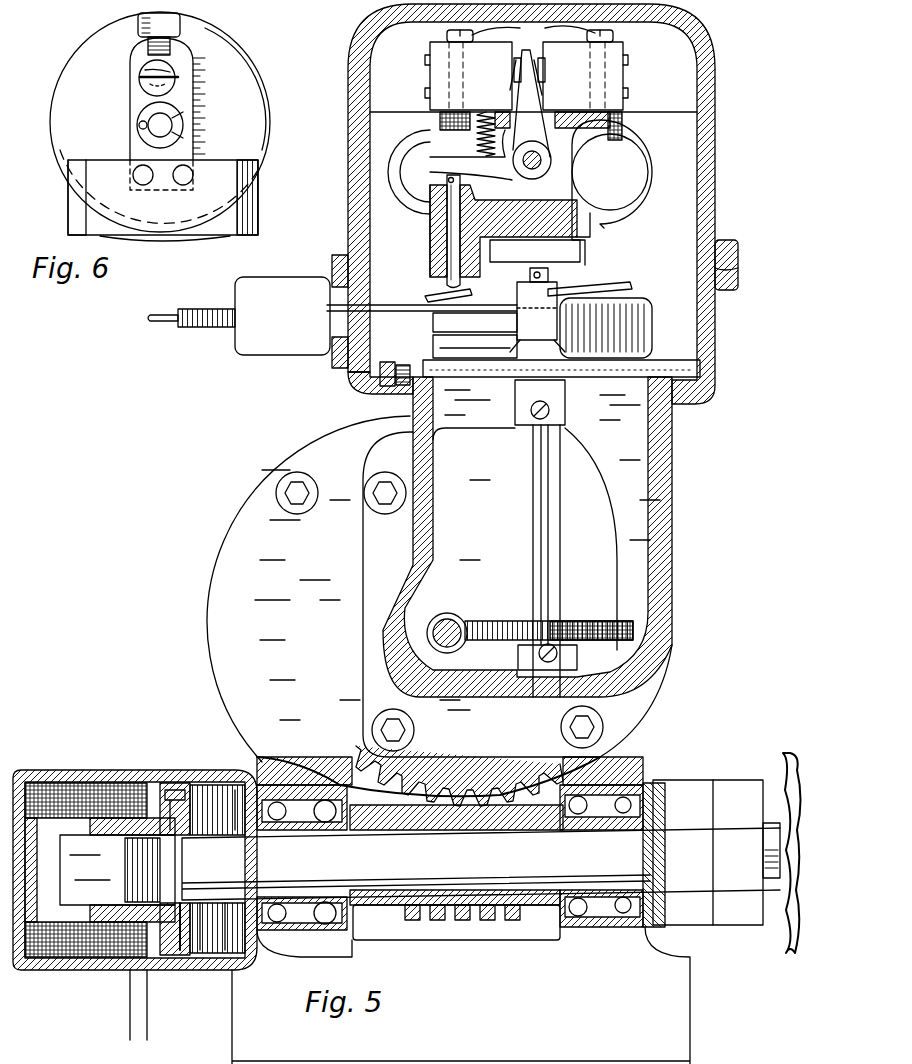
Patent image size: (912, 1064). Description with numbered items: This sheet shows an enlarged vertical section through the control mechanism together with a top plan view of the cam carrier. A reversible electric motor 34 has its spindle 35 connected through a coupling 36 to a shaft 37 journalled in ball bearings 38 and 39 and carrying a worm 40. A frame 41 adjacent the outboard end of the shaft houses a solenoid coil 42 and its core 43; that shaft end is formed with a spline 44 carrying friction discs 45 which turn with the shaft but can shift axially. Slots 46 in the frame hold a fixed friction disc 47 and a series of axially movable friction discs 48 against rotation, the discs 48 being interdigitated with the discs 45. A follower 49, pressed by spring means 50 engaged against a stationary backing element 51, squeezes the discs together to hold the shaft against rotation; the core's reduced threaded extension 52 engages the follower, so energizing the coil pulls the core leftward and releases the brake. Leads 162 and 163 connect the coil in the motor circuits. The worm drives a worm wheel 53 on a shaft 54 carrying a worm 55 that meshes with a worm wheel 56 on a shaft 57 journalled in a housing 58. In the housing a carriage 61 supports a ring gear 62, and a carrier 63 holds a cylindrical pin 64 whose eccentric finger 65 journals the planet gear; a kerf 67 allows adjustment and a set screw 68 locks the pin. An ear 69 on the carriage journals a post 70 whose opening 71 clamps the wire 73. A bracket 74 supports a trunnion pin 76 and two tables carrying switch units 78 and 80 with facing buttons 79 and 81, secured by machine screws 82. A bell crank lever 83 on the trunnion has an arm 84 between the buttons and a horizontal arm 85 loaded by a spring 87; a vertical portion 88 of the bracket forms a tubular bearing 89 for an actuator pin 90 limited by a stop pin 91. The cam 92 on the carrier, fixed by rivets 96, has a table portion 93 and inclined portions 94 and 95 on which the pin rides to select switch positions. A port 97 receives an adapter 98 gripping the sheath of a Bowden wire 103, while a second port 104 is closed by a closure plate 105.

In FIG. 5, the reversible electric motor 34 is at (786, 750).
In FIG. 5, the spindle 35 is at (772, 823).
In FIG. 5, the coupling 36 is at (722, 782).
In FIG. 5, the shaft 37 is at (481, 864).
In FIG. 5, the ball bearing 38 is at (590, 928).
In FIG. 5, the ball bearing 39 is at (330, 930).
In FIG. 5, the worm 40 is at (483, 922).
In FIG. 5, the frame 41 is at (180, 800).
In FIG. 5, the solenoid coil 42 is at (45, 970).
In FIG. 5, the core 43 is at (100, 870).
In FIG. 5, the spline 44 is at (250, 835).
In FIG. 5, the friction discs 45 is at (225, 955).
In FIG. 5, the slots 46 is at (175, 790).
In FIG. 5, the friction disc 47 is at (232, 790).
In FIG. 5, the friction discs 48 is at (215, 785).
In FIG. 5, the follower 49 is at (200, 955).
In FIG. 5, the spring means 50 is at (180, 955).
In FIG. 5, the stationary backing element 51 is at (170, 783).
In FIG. 5, the reduced threaded extension 52 is at (160, 860).
In FIG. 5, the worm wheel 53 is at (498, 785).
In FIG. 5, the shaft 54 is at (462, 612).
In FIG. 5, the worm 55 is at (462, 620).
In FIG. 5, the worm wheel 56 is at (605, 622).
In FIG. 6, the shaft 57 is at (152, 122).
In FIG. 5, the shaft 57 is at (533, 528).
In FIG. 5, the housing 58 is at (672, 522).
In FIG. 5, the carriage 61 is at (433, 345).
In FIG. 5, the ring gear 62 is at (433, 322).
In FIG. 6, the carrier 63 is at (70, 102).
In FIG. 5, the carrier 63 is at (640, 300).
In FIG. 6, the cylindrical pin 64 is at (176, 82).
In FIG. 6, the eccentric finger 65 is at (148, 74).
In FIG. 6, the kerf 67 is at (180, 72).
In FIG. 6, the set screw 68 is at (188, 44).
In FIG. 5, the ear 69 is at (537, 334).
In FIG. 5, the post 70 is at (537, 311).
In FIG. 5, the opening 71 is at (475, 346).
In FIG. 5, the wire 73 is at (420, 302).
In FIG. 5, the bracket 74 is at (510, 240).
In FIG. 5, the trunnion pin 76 is at (540, 168).
In FIG. 5, the switch unit 78 is at (585, 70).
In FIG. 5, the actuator button 79 is at (545, 66).
In FIG. 5, the switch unit 80 is at (468, 70).
In FIG. 5, the button 81 is at (514, 65).
In FIG. 5, the machine screws 82 is at (533, 24).
In FIG. 5, the bell crank lever 83 is at (530, 175).
In FIG. 5, the arm 84 is at (530, 94).
In FIG. 5, the arm 85 is at (430, 165).
In FIG. 5, the spring 87 is at (477, 147).
In FIG. 5, the vertical portion 88 is at (430, 253).
In FIG. 5, the tubular bearing 89 is at (447, 238).
In FIG. 5, the actuator pin 90 is at (447, 220).
In FIG. 5, the stop pin 91 is at (405, 190).
In FIG. 6, the cam 92 is at (215, 238).
In FIG. 5, the cam 92 is at (618, 263).
In FIG. 6, the table portion 93 is at (163, 197).
In FIG. 5, the table portion 93 is at (555, 282).
In FIG. 6, the inclined portion 94 is at (255, 207).
In FIG. 5, the inclined portion 94 is at (442, 290).
In FIG. 6, the inclined portion 95 is at (72, 220).
In FIG. 5, the inclined portion 95 is at (612, 283).
In FIG. 6, the rivets 96 is at (180, 180).
In FIG. 5, the port 97 is at (375, 295).
In FIG. 5, the adapter 98 is at (312, 348).
In FIG. 5, the Bowden wire 103 is at (195, 323).
In FIG. 5, the second port 104 is at (738, 282).
In FIG. 5, the closure plate 105 is at (738, 250).
In FIG. 5, the lead 162 is at (130, 1035).
In FIG. 5, the lead 163 is at (147, 1030).